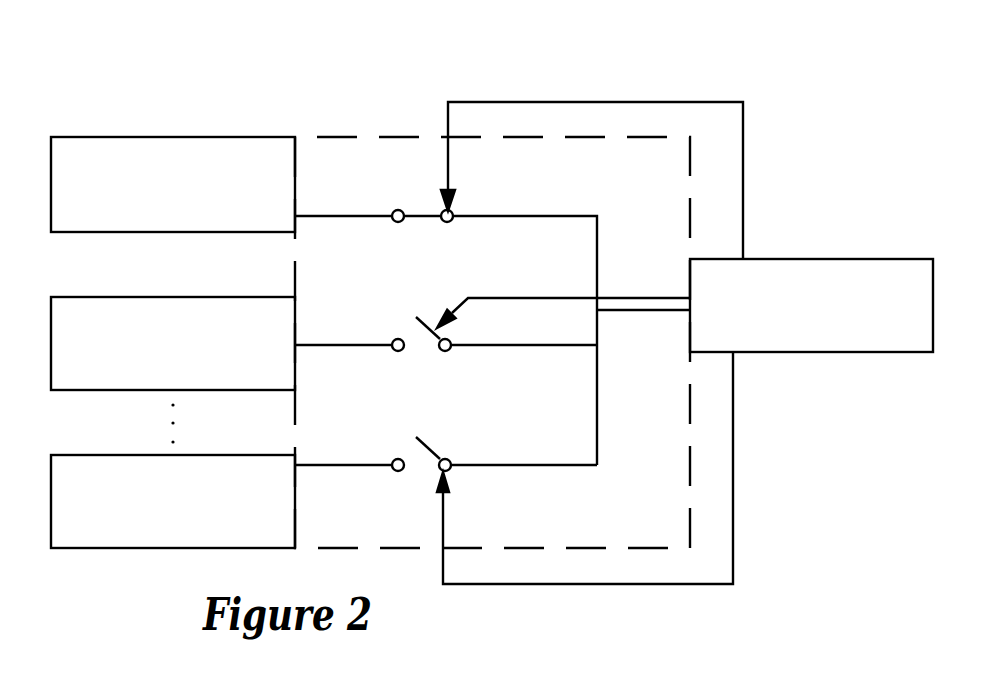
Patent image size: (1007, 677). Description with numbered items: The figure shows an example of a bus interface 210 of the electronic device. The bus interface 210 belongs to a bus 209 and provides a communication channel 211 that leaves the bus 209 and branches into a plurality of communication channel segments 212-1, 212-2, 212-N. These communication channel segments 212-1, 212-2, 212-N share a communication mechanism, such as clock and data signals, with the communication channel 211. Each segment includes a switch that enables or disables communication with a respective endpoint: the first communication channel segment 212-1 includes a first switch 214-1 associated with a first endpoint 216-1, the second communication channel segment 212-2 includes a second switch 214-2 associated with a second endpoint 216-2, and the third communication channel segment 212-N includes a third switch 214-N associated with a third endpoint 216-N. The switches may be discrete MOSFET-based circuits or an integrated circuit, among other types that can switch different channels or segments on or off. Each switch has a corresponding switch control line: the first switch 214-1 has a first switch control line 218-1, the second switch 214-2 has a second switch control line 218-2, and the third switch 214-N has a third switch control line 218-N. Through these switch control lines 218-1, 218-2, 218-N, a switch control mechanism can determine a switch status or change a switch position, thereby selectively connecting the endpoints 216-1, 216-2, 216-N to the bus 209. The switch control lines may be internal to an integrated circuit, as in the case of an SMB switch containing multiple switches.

The bus interface 210 is at (250, 42).
The first endpoint 216-1 is at (118, 137).
The second endpoint 216-2 is at (118, 297).
The third endpoint 216-N is at (118, 455).
The first switch 214-1 is at (447, 223).
The second switch 214-2 is at (447, 352).
The third switch 214-N is at (449, 459).
The first communication channel segment 212-1 is at (541, 216).
The second communication channel segment 212-2 is at (502, 345).
The third communication channel segment 212-N is at (568, 472).
The communication channel 211 is at (628, 312).
The bus 209 is at (830, 259).
The first switch control line 218-1 is at (688, 102).
The second switch control line 218-2 is at (560, 297).
The third switch control line 218-N is at (693, 584).